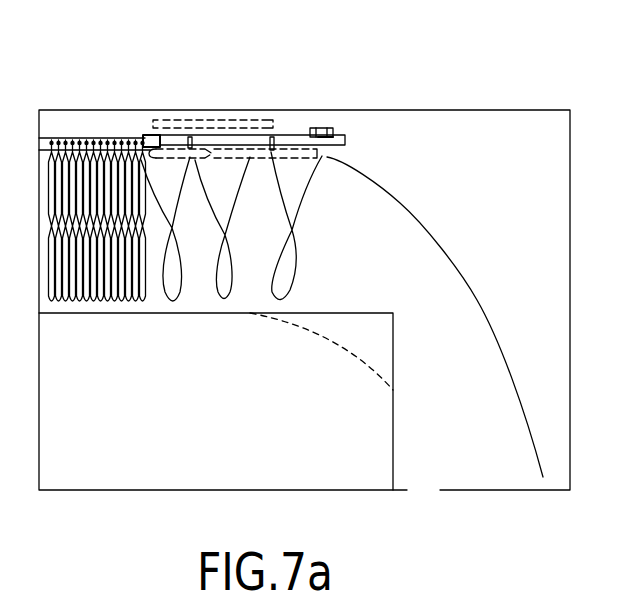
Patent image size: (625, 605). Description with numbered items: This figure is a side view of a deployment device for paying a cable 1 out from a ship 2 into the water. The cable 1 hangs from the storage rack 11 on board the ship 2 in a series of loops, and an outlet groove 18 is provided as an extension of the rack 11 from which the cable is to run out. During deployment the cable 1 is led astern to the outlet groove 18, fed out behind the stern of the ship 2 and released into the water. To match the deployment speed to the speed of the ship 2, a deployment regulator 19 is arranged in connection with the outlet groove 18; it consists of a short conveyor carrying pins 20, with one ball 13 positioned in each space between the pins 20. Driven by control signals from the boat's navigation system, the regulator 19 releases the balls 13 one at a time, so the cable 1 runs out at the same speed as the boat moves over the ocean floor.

The cable 1 is at (477, 295).
The ship 2 is at (216, 401).
The rack 11 is at (92, 137).
The ball 13 is at (280, 152).
The outlet groove 18 is at (237, 137).
The deployment regulator 19 is at (325, 130).
The pins 20 is at (323, 127).